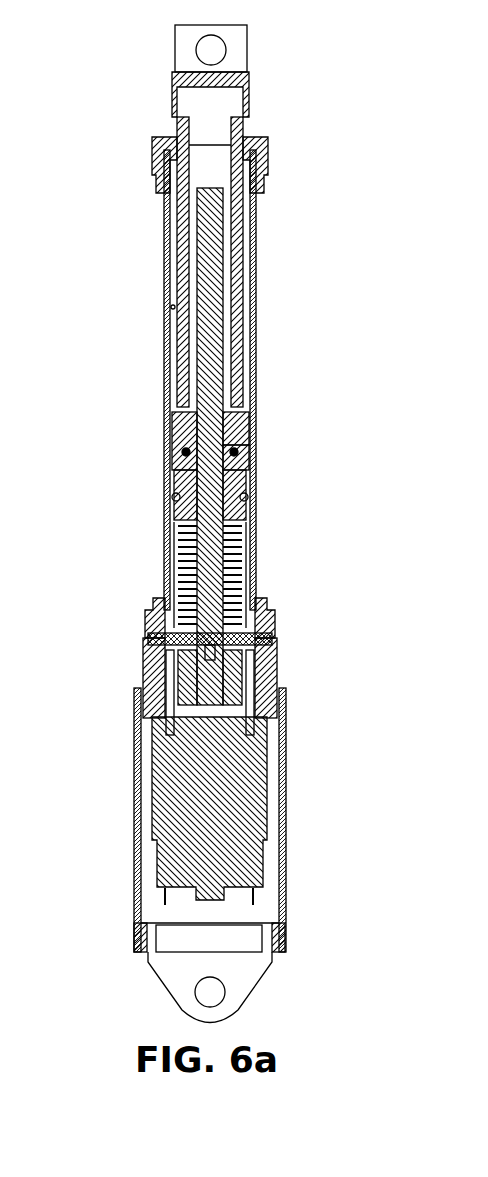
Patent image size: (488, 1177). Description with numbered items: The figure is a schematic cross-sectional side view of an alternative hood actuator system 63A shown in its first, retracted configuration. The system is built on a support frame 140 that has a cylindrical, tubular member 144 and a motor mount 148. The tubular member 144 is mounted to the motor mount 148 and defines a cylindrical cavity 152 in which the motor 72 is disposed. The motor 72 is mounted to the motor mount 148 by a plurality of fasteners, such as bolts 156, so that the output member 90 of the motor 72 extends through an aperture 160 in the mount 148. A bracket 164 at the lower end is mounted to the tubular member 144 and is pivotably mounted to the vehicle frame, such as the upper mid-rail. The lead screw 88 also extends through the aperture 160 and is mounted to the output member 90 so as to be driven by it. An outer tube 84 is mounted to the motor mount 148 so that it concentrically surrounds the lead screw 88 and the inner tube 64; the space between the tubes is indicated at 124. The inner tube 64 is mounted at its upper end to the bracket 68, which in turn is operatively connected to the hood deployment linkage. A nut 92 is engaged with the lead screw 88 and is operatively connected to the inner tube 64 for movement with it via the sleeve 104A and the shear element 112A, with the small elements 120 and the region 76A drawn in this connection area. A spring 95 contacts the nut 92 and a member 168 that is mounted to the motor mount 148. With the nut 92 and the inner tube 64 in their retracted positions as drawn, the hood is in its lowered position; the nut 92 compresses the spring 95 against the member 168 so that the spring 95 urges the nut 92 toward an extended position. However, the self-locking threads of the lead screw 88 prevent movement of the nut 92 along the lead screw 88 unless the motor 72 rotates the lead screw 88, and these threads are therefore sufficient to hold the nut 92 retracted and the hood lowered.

The bracket 68 is at (244, 57).
The hood actuator system 63A is at (100, 497).
The inner tube 64 is at (245, 272).
The outer tube 84 is at (166, 348).
The annular chamber 124 is at (172, 306).
The lead screw 88 is at (208, 276).
The nut 92 is at (174, 472).
The shear element 112A is at (255, 445).
The sleeve 104A is at (250, 470).
The ball 120 is at (248, 497).
The piston assembly 76A is at (148, 513).
The spring 95 is at (252, 530).
The aperture 160 is at (147, 633).
The member 168 is at (265, 635).
The motor mount 148 is at (262, 688).
The output member 90 is at (262, 655).
The bolts 156 is at (250, 725).
The tubular member 144 is at (137, 845).
The cylindrical cavity 152 is at (282, 875).
The motor 72 is at (172, 795).
The support frame 140 is at (97, 708).
The bracket 164 is at (234, 978).